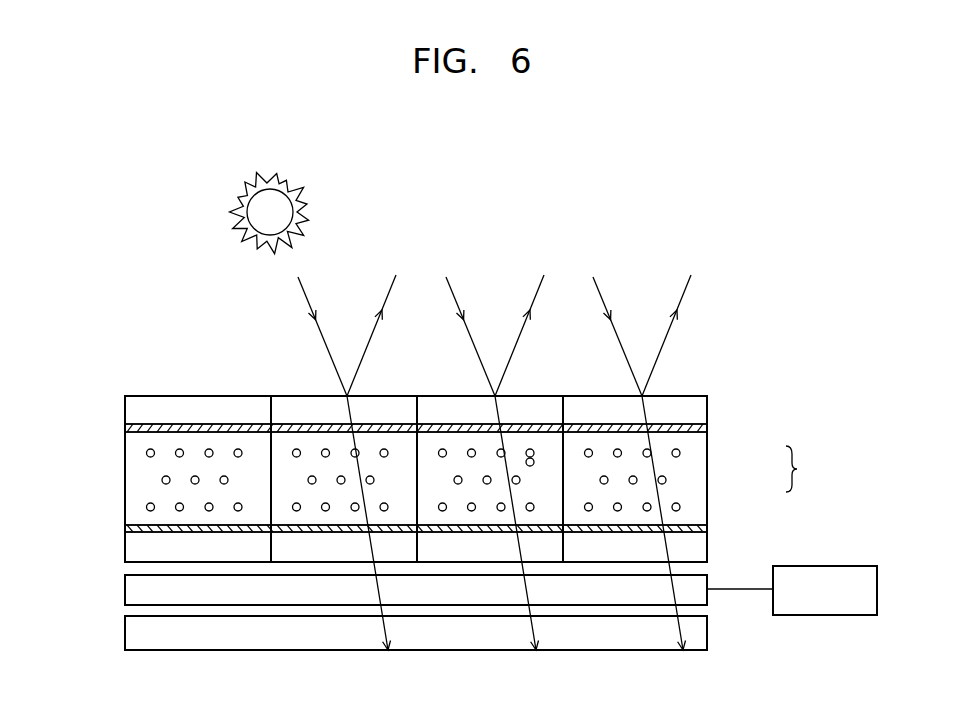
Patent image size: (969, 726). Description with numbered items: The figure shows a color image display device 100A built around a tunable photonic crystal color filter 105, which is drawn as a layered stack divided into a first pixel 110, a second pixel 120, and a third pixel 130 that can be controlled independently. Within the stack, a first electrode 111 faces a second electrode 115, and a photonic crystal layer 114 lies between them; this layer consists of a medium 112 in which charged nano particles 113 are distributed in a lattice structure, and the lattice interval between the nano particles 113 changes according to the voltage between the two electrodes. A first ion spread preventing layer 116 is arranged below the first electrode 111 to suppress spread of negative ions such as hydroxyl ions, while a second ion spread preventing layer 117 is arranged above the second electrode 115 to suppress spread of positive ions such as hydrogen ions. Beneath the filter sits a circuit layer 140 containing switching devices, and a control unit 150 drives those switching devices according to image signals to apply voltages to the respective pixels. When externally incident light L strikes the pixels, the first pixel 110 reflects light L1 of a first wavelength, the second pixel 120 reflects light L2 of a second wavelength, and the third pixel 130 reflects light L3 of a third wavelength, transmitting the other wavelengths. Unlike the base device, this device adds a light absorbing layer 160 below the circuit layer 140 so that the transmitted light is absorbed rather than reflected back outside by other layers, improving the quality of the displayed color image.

The color image display device 100A is at (160, 315).
The tunable photonic crystal color filter 105 is at (118, 473).
The first pixel 110 is at (685, 388).
The second pixel 120 is at (540, 388).
The third pixel 130 is at (395, 388).
The first electrode 111 is at (710, 410).
The first ion spread preventing layer 116 is at (710, 430).
The nano particles 113 is at (680, 453).
The medium 112 is at (700, 487).
The photonic crystal layer 114 is at (811, 469).
The second ion spread preventing layer 117 is at (710, 528).
The second electrode 115 is at (707, 552).
The circuit layer 140 is at (125, 590).
The light absorbing layer 160 is at (125, 633).
The control unit 150 is at (825, 615).
The externally incident light L is at (488, 464).
The light of a first wavelength L1 is at (675, 335).
The light of a second wavelength L2 is at (529, 335).
The light of a third wavelength L3 is at (382, 335).